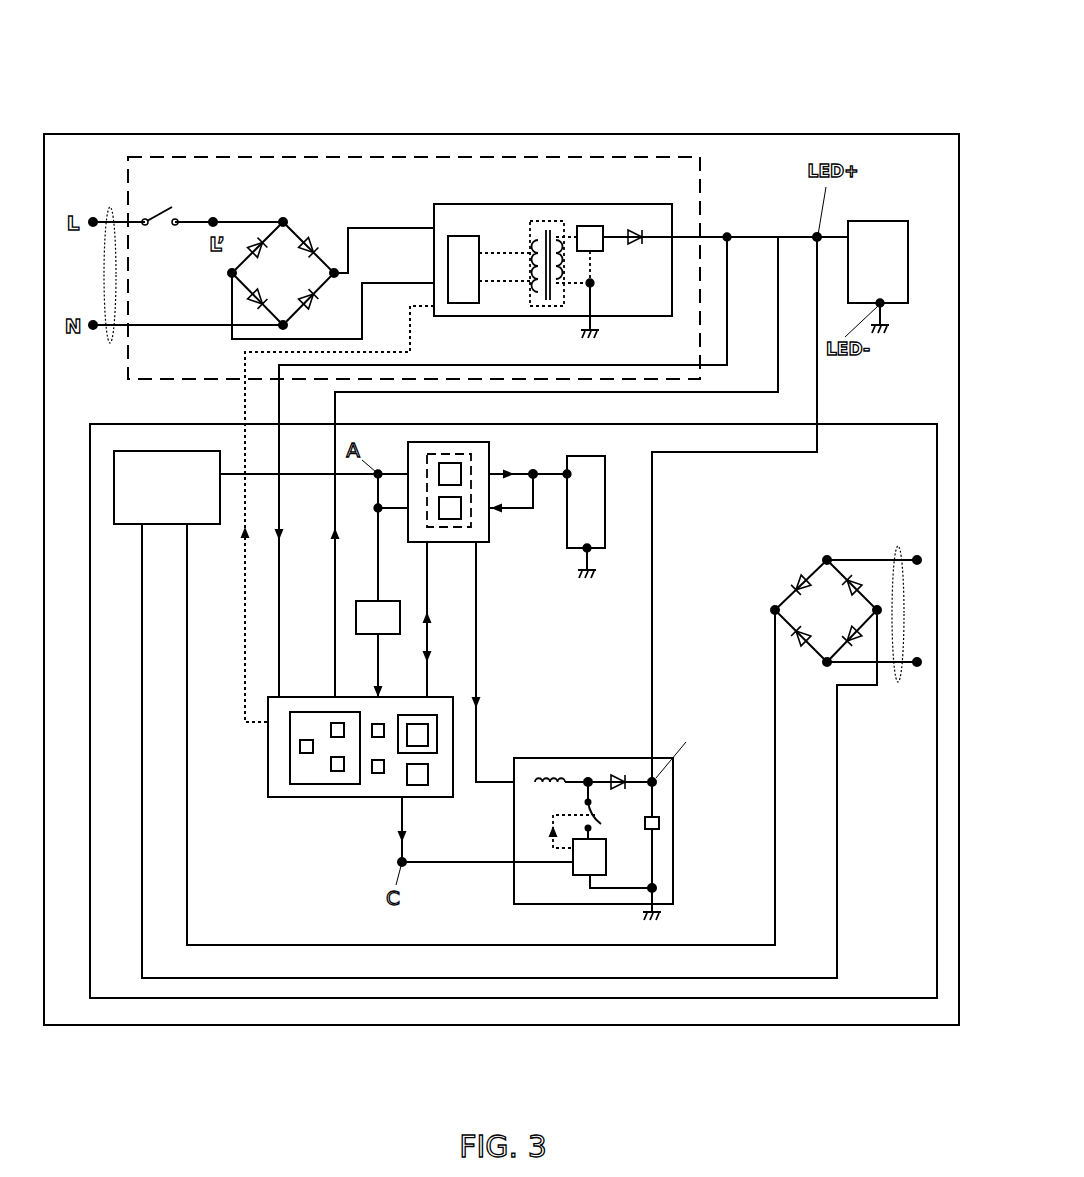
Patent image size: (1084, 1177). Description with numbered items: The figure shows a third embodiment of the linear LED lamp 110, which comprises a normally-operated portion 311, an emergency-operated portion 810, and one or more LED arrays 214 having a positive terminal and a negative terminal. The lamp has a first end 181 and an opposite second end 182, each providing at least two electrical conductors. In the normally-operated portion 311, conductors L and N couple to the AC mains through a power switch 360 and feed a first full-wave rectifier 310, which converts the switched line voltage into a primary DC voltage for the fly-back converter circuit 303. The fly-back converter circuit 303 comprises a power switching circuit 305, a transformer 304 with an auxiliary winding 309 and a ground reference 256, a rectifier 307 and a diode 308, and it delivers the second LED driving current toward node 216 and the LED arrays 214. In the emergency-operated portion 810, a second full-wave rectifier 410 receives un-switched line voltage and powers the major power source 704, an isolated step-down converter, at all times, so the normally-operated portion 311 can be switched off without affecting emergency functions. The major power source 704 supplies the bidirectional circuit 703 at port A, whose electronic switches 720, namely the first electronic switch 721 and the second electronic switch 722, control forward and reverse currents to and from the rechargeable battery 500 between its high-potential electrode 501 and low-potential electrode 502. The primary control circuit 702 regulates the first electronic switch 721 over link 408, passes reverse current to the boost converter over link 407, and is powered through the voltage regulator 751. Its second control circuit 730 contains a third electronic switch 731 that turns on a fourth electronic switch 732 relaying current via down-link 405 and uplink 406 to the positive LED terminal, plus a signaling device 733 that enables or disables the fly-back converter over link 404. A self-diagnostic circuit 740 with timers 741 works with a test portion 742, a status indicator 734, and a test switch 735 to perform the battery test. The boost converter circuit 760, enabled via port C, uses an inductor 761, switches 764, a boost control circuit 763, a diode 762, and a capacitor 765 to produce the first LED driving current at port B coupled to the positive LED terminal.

The linear LED lamp 110 is at (400, 132).
The normally-operated portion 311 is at (498, 152).
The fly-back converter circuit 303 is at (653, 202).
The power switching circuit 305 is at (458, 236).
The transformer 304 is at (557, 259).
The auxiliary winding 309 is at (548, 296).
The rectifier 307 is at (597, 226).
The diode 308 is at (640, 235).
The LED+ output node 216 is at (730, 235).
The LED arrays 214 is at (910, 257).
The ground reference 256 is at (600, 333).
The power switch 360 is at (155, 213).
The first full-wave rectifier 310 is at (268, 216).
The first end 181 is at (108, 338).
The second end 182 is at (900, 687).
The second full-wave rectifier 410 is at (840, 555).
The emergency-operated portion 810 is at (440, 1000).
The major power source 704 is at (137, 527).
The link 404 is at (243, 532).
The down-link 405 is at (276, 541).
The uplink 406 is at (333, 534).
The voltage regulator 751 is at (366, 600).
The bidirectional circuit 703 is at (479, 489).
The second electronic switch 722 is at (450, 462).
The electronic switches 720 is at (470, 500).
The first electronic switch 721 is at (462, 517).
The high-potential electrode 501 is at (569, 472).
The rechargeable battery 500 is at (605, 478).
The low-potential electrode 502 is at (582, 553).
The link 408 is at (430, 640).
The link 407 is at (479, 703).
The primary control circuit 702 is at (349, 768).
The second control circuit 730 is at (279, 796).
The third electronic switch 731 is at (333, 735).
The fourth electronic switch 732 is at (333, 770).
The signaling device 733 is at (297, 748).
The status indicator 734 is at (372, 735).
The test switch 735 is at (378, 773).
The self-diagnostic circuit 740 is at (449, 750).
The timers 741 is at (417, 735).
The test portion 742 is at (418, 785).
The boost converter circuit 760 is at (589, 822).
The inductor 761 is at (545, 778).
The diode 762 is at (614, 778).
The boost control circuit 763 is at (580, 876).
The switches 764 is at (600, 823).
The capacitor 765 is at (660, 823).